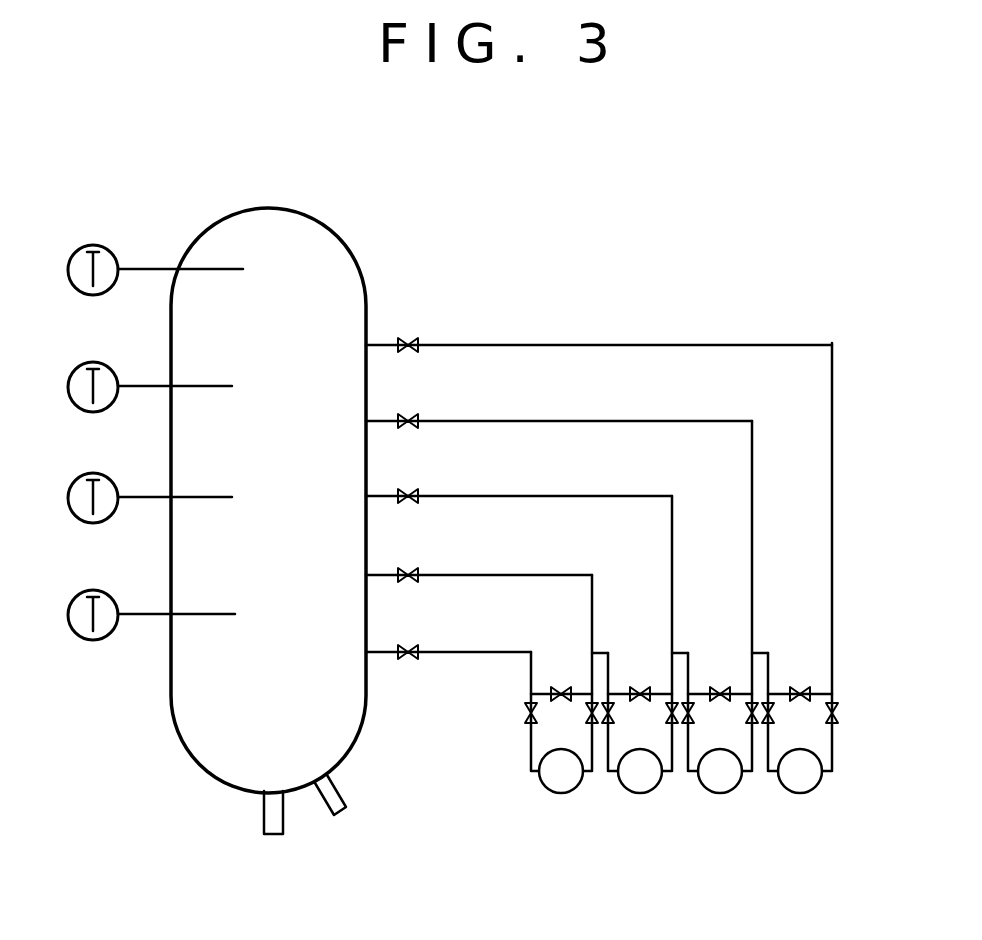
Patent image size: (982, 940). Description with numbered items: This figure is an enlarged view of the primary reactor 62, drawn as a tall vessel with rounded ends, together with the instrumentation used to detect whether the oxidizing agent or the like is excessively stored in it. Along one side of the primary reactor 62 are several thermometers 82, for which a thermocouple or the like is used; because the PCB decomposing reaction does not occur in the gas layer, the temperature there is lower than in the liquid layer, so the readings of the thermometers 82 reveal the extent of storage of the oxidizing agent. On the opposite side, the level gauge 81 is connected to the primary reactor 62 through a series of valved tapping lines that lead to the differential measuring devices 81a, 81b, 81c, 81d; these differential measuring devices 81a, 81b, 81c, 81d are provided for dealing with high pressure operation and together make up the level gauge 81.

The primary reactor 62 is at (353, 244).
The thermometer 82 is at (107, 258).
The level gauge 81 is at (539, 785).
The differential measuring device 81a is at (567, 794).
The differential measuring device 81b is at (643, 794).
The differential measuring device 81c is at (720, 793).
The differential measuring device 81d is at (802, 793).